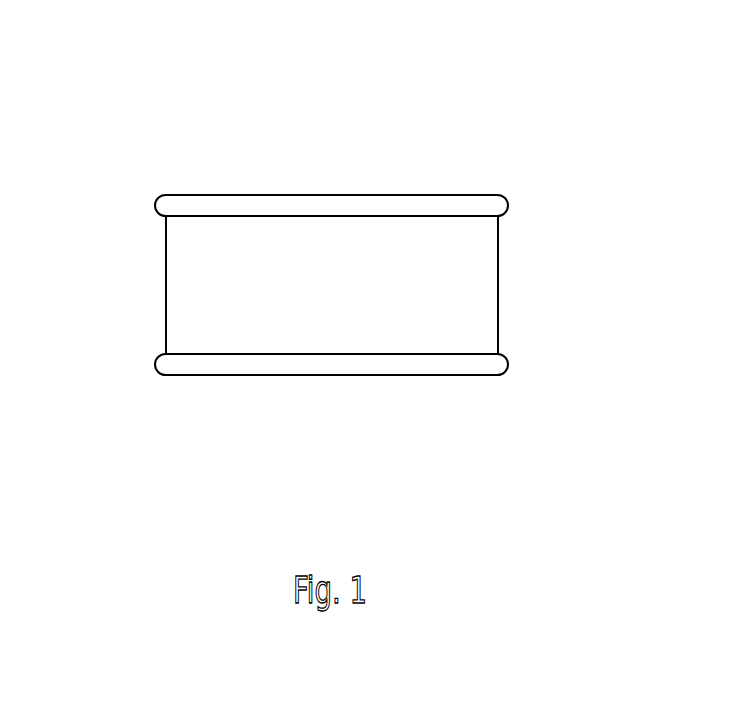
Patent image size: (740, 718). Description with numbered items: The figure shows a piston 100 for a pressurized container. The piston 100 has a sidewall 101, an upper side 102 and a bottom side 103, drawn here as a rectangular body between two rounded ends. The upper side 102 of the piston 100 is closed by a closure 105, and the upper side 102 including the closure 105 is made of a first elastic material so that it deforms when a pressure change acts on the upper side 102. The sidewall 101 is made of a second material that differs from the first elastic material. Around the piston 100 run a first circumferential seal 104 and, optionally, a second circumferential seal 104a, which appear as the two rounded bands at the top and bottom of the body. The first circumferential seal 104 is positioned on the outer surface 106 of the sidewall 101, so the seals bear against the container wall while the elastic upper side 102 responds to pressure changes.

The piston 100 is at (558, 170).
The sidewall 101 is at (498, 283).
The upper side 102 is at (337, 183).
The bottom side 103 is at (340, 388).
The first circumferential seal 104 is at (168, 203).
The second circumferential seal 104a is at (168, 361).
The closure 105 is at (253, 194).
The outer surface 106 is at (166, 288).